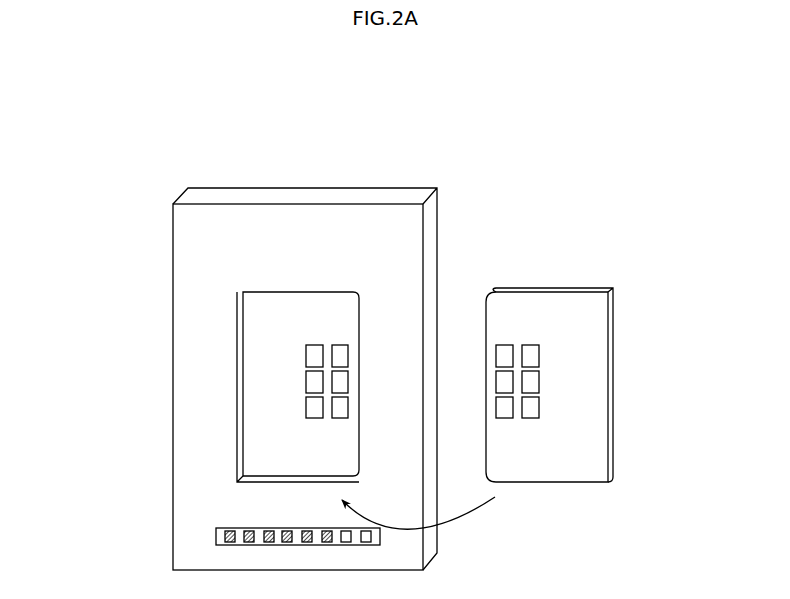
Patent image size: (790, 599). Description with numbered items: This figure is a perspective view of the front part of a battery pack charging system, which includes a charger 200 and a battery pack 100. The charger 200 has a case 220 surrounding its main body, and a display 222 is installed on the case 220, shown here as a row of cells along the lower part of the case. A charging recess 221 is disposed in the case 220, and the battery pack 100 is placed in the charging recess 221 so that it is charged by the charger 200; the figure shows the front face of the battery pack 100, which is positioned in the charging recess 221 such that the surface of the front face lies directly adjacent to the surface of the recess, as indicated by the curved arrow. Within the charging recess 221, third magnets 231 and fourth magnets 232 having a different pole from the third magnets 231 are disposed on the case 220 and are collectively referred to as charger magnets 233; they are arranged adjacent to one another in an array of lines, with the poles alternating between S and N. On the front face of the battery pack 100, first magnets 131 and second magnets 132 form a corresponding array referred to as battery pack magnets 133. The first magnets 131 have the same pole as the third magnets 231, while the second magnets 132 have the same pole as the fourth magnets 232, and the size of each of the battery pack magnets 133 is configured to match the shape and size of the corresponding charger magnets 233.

The battery pack 100 is at (624, 277).
The first magnets 131 is at (503, 337).
The second magnets 132 is at (533, 337).
The battery pack magnets 133 is at (485, 209).
The charger 200 is at (166, 172).
The case 220 is at (188, 268).
The charging recess 221 is at (245, 378).
The display 222 is at (216, 535).
The third magnets 231 is at (312, 337).
The fourth magnets 232 is at (340, 337).
The charger magnets 233 is at (392, 112).